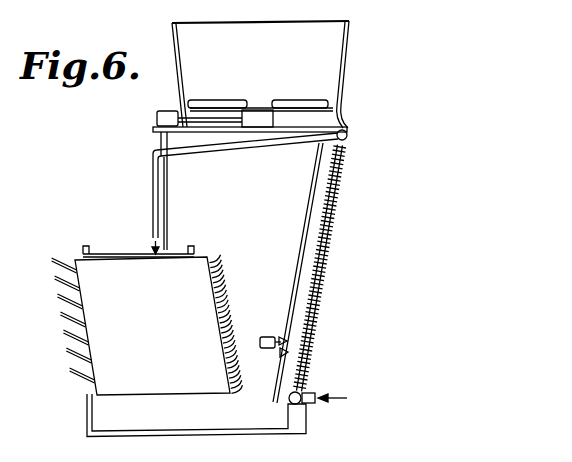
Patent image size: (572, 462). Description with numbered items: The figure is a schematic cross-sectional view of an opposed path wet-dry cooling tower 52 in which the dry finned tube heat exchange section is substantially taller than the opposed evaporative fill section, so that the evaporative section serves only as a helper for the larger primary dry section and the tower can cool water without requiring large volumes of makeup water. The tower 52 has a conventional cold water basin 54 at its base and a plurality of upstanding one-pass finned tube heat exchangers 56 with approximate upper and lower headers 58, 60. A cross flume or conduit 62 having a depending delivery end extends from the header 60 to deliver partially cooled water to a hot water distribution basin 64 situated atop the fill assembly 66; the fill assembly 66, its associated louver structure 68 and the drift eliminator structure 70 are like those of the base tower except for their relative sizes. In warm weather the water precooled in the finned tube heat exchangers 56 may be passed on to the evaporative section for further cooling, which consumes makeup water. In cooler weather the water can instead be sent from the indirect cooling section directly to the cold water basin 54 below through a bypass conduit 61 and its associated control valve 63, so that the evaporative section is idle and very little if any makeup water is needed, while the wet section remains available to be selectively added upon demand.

The tower 52 is at (352, 101).
The cold water basin 54 is at (182, 433).
The finned tube heat exchangers 56 is at (333, 205).
The upper header 58 is at (301, 394).
The lower header 60 is at (348, 132).
The bypass conduit 61 is at (301, 231).
The cross flume or conduit 62 is at (226, 147).
The control valve 63 is at (274, 336).
The hot water distribution basin 64 is at (97, 252).
The fill assembly 66 is at (147, 342).
The louver structure 68 is at (64, 283).
The drift eliminator structure 70 is at (213, 286).